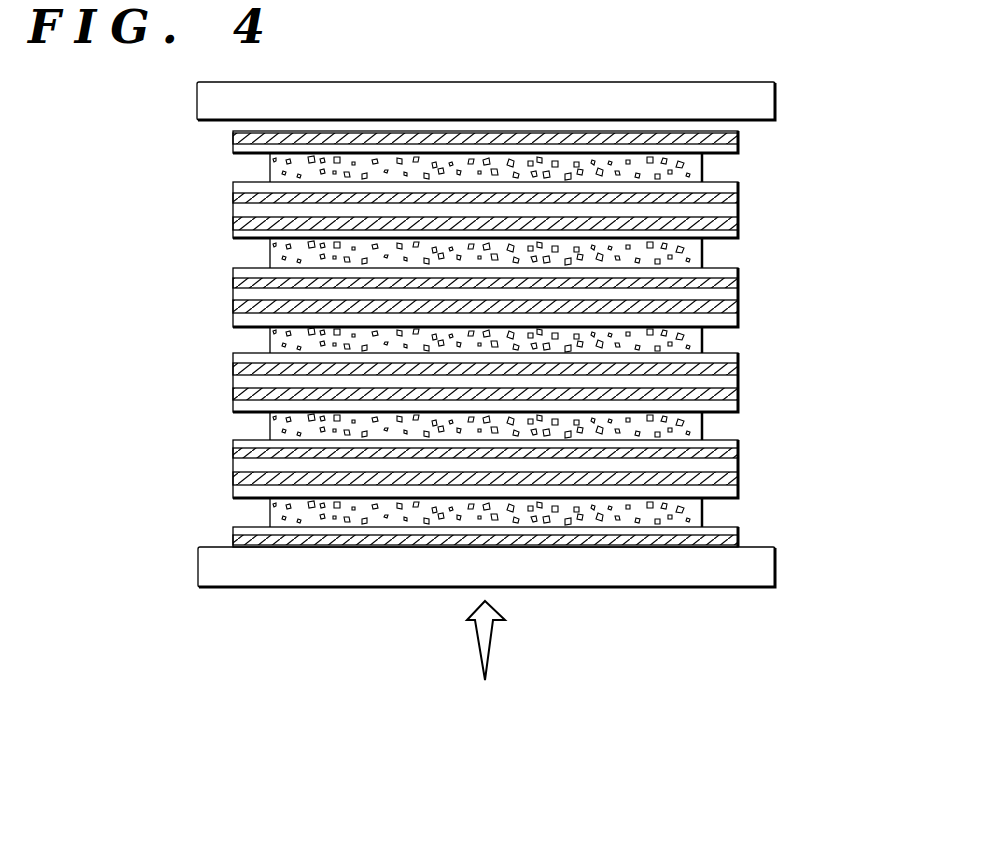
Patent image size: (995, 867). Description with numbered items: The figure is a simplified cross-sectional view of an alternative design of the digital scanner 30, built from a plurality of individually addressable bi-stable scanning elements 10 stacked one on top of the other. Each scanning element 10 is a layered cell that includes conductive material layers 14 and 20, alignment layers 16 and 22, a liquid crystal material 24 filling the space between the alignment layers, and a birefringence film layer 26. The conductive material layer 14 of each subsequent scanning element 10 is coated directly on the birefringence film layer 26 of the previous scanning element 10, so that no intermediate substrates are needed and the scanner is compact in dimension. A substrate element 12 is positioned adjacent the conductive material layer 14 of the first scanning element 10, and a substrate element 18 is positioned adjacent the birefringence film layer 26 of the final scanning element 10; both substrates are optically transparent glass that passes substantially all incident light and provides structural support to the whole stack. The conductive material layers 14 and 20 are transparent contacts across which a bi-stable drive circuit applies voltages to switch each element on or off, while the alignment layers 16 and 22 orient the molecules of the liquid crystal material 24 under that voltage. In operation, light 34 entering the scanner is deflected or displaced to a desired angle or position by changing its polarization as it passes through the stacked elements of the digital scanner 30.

The bi-stable scanning element 10 is at (775, 203).
The substrate element 12 is at (757, 573).
The conductive material layer 14 is at (479, 372).
The alignment layer 16 is at (733, 187).
The substrate element 18 is at (760, 102).
The conductive material layer 20 is at (488, 319).
The alignment layer 22 is at (732, 150).
The liquid crystal material 24 is at (692, 515).
The birefringence film layer 26 is at (732, 125).
The digital scanner 30 is at (911, 462).
The light 34 is at (556, 636).